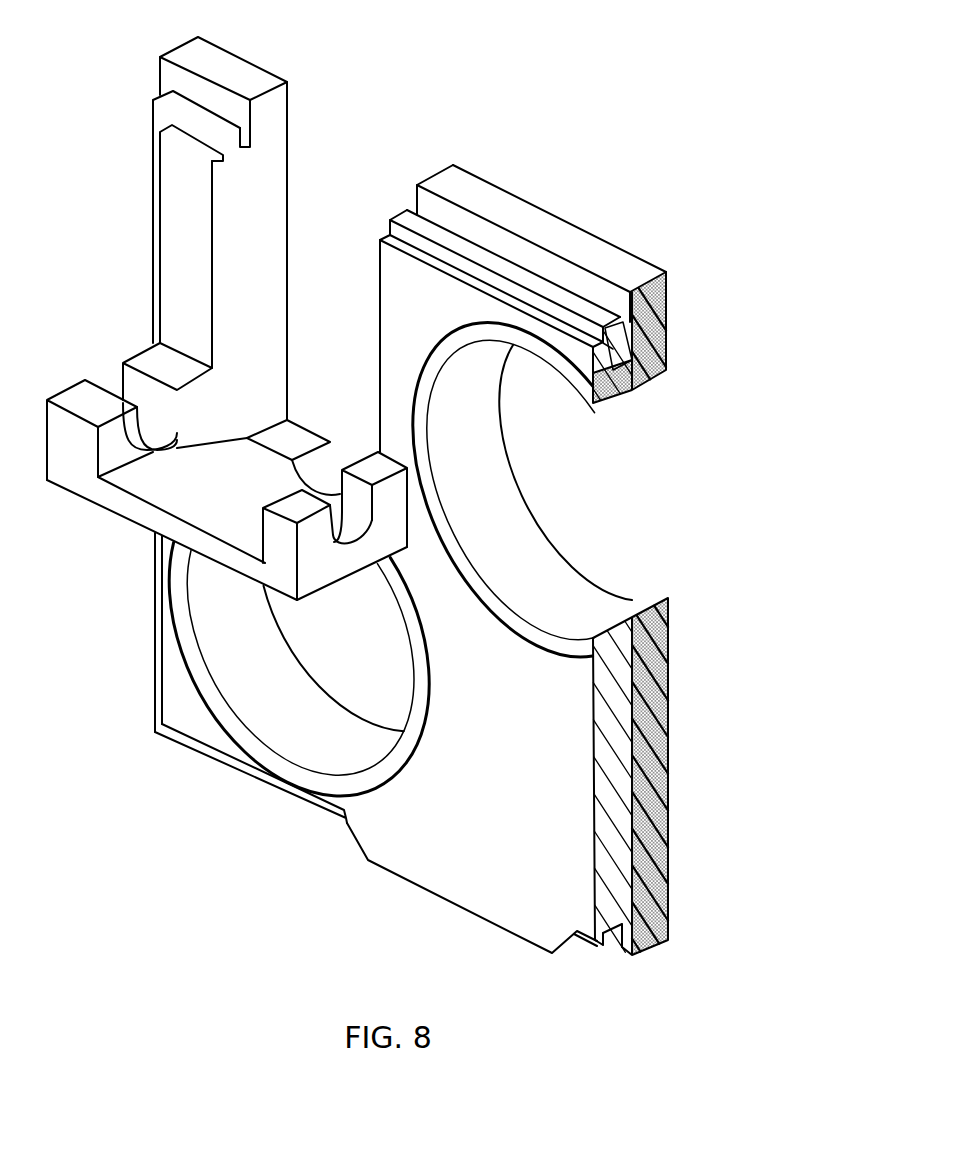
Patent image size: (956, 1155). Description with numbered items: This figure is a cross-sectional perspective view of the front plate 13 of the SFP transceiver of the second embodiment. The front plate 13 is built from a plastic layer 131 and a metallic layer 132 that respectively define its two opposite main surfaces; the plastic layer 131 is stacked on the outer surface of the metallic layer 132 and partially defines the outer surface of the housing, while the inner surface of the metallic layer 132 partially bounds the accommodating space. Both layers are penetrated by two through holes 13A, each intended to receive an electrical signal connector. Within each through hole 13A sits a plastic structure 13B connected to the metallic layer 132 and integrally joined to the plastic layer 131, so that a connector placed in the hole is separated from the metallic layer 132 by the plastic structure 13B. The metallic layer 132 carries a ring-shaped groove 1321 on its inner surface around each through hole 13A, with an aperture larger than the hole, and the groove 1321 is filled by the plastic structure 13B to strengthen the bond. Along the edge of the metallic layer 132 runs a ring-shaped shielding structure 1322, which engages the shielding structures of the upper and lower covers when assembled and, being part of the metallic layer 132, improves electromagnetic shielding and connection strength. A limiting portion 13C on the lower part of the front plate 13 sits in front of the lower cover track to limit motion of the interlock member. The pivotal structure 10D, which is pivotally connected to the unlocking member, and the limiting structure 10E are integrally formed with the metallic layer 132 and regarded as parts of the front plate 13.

The front plate 13 is at (59, 31).
The plastic layer 131 is at (657, 349).
The metallic layer 132 is at (650, 318).
The ring-shaped groove 1321 is at (603, 350).
The ring-shaped shielding structure 1322 is at (620, 357).
The through hole 13A is at (615, 485).
The plastic structure 13B is at (570, 587).
The limiting portion 13C is at (453, 890).
The pivotal structure 10D is at (130, 507).
The limiting structure 10E is at (263, 470).